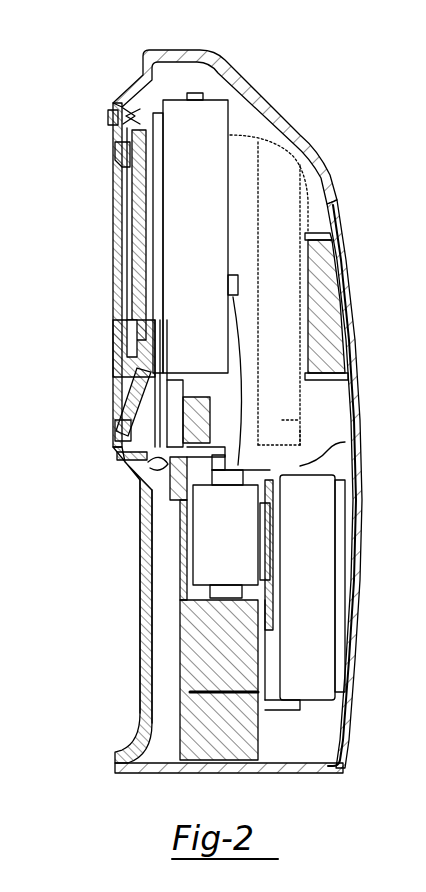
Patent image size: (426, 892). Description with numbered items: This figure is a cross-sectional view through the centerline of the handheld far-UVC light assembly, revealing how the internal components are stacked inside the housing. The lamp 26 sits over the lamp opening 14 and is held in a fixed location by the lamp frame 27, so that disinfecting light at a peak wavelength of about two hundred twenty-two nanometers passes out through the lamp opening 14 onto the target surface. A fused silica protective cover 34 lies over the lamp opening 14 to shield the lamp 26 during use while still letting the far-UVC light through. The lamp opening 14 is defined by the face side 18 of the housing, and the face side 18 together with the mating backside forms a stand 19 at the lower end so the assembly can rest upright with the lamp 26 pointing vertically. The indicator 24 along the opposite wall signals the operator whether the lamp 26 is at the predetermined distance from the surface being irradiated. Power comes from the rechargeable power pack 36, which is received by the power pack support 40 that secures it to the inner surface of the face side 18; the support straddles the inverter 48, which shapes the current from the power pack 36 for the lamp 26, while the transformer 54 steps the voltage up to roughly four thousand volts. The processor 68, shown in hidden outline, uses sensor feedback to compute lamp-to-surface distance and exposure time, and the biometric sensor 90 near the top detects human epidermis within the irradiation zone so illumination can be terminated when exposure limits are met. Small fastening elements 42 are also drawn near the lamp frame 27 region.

The lamp opening 14 is at (110, 297).
The face side 18 is at (140, 600).
The stand 19 is at (146, 782).
The indicator 24 is at (349, 278).
The lamp 26 is at (201, 222).
The lamp frame 27 is at (113, 347).
The fused silica protective cover 34 is at (132, 214).
The power pack 36 is at (315, 567).
The power pack support 40 is at (345, 442).
The fasteners 42 is at (188, 470).
The inverter 48 is at (231, 671).
The transformer 54 is at (231, 539).
The processor 68 is at (299, 261).
The biometric sensor 90 is at (108, 118).